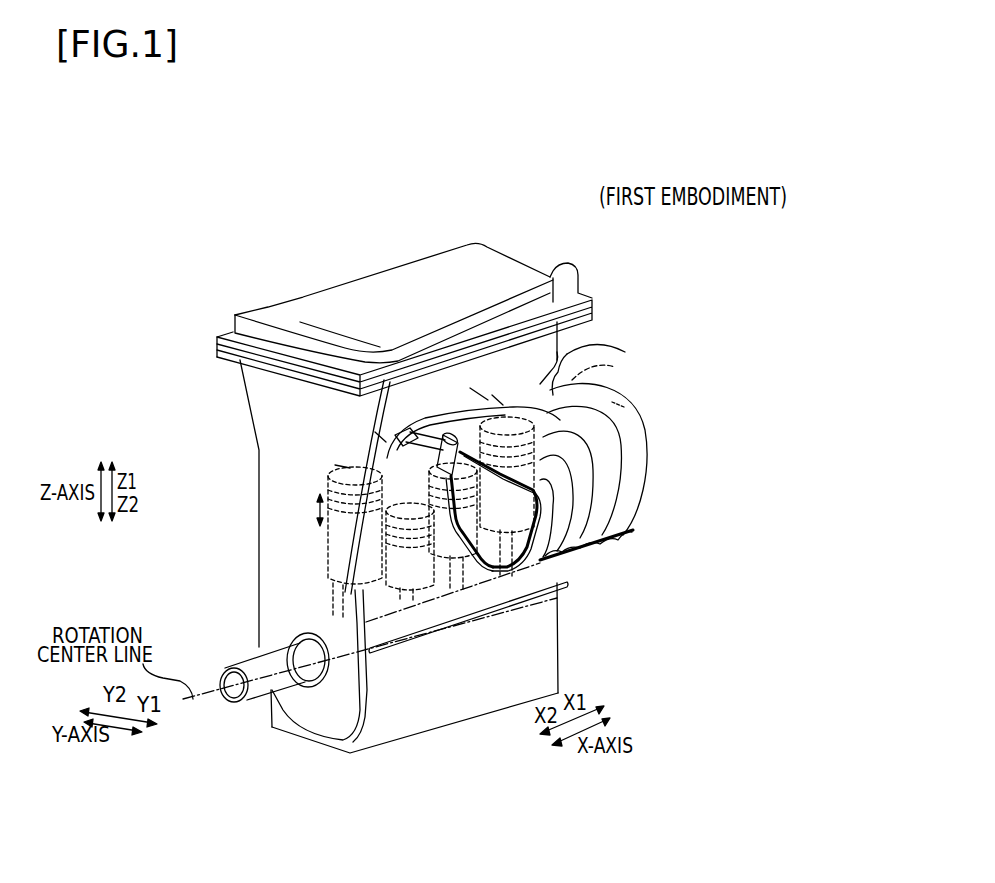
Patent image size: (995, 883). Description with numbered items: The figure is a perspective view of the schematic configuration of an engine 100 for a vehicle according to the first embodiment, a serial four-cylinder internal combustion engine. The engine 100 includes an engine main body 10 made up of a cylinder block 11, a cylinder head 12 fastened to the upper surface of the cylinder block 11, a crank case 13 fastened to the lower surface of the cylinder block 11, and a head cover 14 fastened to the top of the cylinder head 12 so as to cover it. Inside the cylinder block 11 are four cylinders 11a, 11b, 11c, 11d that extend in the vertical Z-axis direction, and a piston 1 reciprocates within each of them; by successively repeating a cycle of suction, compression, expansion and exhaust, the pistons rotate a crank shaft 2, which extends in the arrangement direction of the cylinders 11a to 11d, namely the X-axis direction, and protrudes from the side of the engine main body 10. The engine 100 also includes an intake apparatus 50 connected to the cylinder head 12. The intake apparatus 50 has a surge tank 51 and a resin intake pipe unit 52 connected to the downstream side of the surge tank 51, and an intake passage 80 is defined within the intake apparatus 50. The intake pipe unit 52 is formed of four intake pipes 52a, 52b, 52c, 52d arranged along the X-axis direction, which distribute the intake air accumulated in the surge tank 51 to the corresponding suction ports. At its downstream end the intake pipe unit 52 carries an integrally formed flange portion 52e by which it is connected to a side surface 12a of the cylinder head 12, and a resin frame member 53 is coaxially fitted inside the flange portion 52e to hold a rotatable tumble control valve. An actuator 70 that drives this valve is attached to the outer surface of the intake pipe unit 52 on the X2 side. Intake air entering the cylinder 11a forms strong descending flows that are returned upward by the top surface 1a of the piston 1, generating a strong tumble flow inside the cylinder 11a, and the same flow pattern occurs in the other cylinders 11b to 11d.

The engine 100 is at (197, 305).
The engine main body 10 is at (763, 699).
The cylinder block 11 is at (553, 576).
The cylinder 11a is at (500, 418).
The cylinder 11b is at (483, 418).
The cylinder 11c is at (382, 436).
The cylinder 11d is at (343, 466).
The cylinder head 12 is at (552, 338).
The side surface 12a is at (542, 385).
The crank case 13 is at (553, 673).
The head cover 14 is at (553, 270).
The piston 1 is at (468, 509).
The top surface 1a is at (328, 478).
The crank shaft 2 is at (253, 659).
The intake apparatus 50 is at (652, 384).
The surge tank 51 is at (556, 620).
The intake pipe unit 52 is at (712, 490).
The intake pipe 52a is at (640, 418).
The intake pipe 52b is at (607, 439).
The intake pipe 52c is at (580, 462).
The intake pipe 52d is at (553, 482).
The flange portion 52e is at (578, 357).
The frame member 53 is at (575, 383).
The actuator 70 is at (437, 425).
The intake passage 80 is at (615, 402).